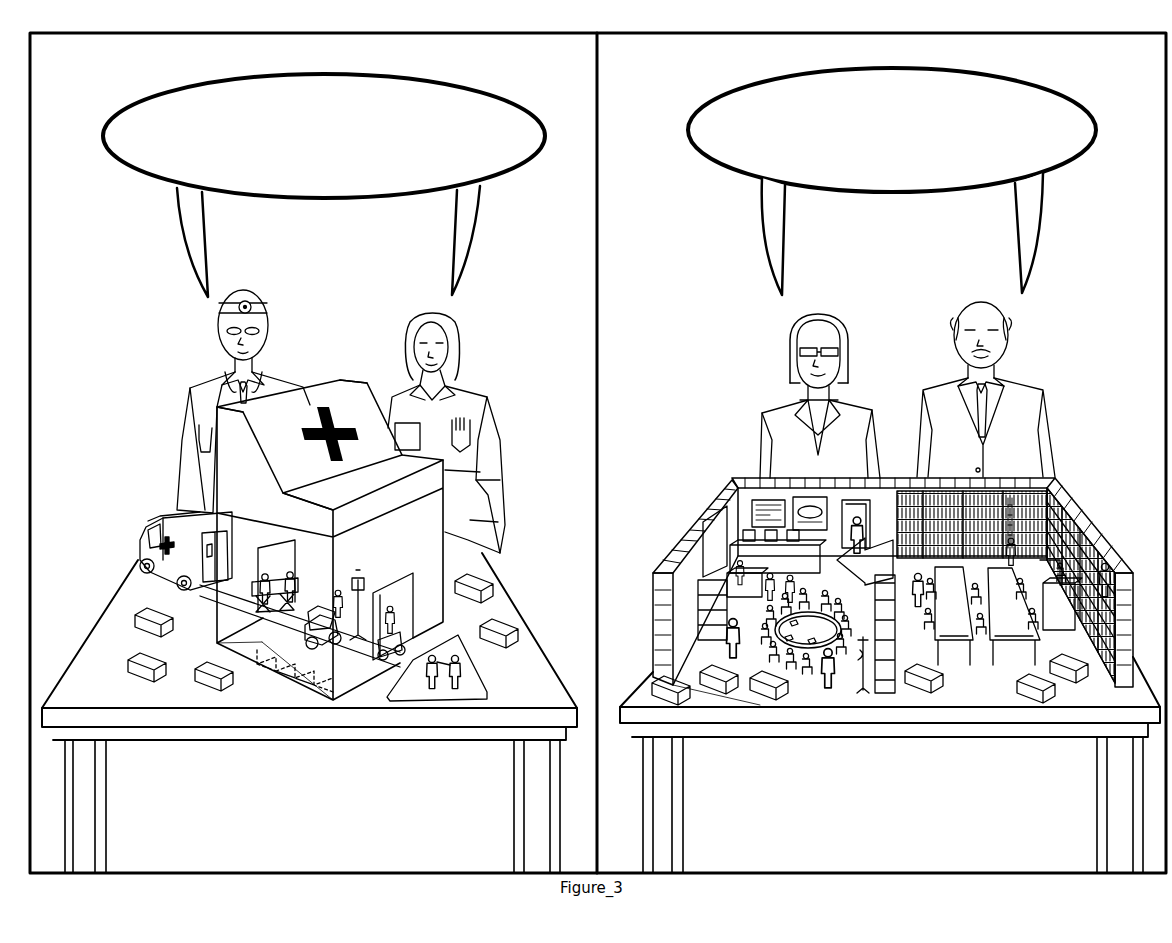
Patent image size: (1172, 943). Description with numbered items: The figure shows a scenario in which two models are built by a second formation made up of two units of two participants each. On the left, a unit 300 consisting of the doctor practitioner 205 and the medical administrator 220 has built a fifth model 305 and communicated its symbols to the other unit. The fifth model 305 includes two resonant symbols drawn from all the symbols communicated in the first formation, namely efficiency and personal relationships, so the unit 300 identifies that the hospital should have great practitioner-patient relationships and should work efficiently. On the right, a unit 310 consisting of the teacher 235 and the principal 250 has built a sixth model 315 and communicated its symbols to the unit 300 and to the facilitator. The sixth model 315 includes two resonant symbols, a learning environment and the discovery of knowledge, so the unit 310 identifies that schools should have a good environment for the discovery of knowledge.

The unit 300 is at (512, 77).
The unit 310 is at (1096, 75).
The doctor practitioner 205 is at (253, 286).
The medical administrator 220 is at (462, 333).
The fifth model 305 is at (318, 367).
The principal 250 is at (833, 310).
The teacher 235 is at (1025, 328).
The sixth model 315 is at (707, 472).